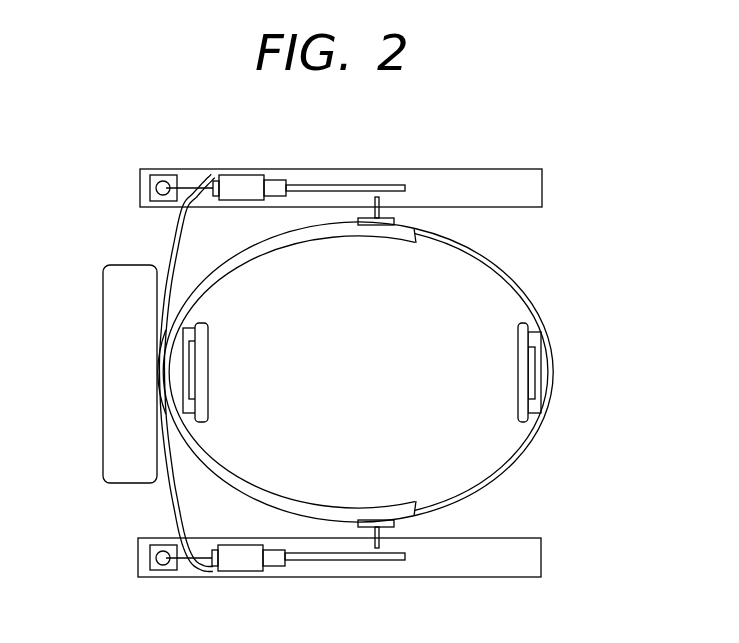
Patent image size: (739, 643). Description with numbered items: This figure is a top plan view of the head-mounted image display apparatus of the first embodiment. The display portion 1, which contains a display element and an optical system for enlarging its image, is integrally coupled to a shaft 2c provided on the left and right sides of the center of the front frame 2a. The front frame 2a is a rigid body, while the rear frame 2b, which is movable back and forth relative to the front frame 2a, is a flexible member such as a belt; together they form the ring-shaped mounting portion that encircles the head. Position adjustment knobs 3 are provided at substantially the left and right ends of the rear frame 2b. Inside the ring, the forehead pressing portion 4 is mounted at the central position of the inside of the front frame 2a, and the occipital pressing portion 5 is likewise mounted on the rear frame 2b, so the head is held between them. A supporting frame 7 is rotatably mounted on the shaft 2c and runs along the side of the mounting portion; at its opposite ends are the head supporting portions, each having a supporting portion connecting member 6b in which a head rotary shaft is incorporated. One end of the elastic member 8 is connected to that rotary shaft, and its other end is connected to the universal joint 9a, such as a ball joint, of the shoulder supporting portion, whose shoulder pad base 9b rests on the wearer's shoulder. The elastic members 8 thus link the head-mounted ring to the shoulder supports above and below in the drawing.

The display portion 1 is at (118, 306).
The front frame 2a is at (265, 487).
The rear frame 2b is at (485, 476).
The shaft 2c is at (165, 378).
The position adjustment knobs 3 is at (395, 219).
The forehead pressing portion 4 is at (205, 353).
The occipital pressing portion 5 is at (525, 366).
The supporting portion connecting member 6b is at (245, 175).
The supporting frame 7 is at (170, 233).
The elastic member 8 is at (395, 185).
The universal joint 9a is at (150, 552).
The shoulder pad base 9b is at (513, 545).